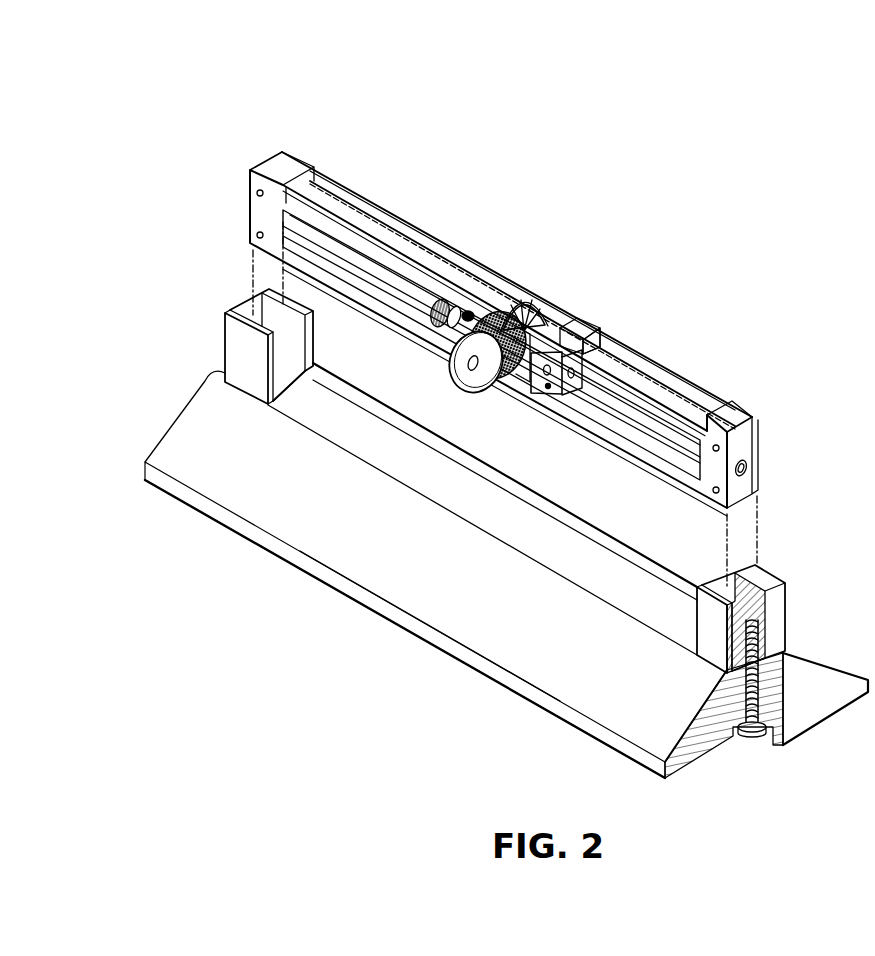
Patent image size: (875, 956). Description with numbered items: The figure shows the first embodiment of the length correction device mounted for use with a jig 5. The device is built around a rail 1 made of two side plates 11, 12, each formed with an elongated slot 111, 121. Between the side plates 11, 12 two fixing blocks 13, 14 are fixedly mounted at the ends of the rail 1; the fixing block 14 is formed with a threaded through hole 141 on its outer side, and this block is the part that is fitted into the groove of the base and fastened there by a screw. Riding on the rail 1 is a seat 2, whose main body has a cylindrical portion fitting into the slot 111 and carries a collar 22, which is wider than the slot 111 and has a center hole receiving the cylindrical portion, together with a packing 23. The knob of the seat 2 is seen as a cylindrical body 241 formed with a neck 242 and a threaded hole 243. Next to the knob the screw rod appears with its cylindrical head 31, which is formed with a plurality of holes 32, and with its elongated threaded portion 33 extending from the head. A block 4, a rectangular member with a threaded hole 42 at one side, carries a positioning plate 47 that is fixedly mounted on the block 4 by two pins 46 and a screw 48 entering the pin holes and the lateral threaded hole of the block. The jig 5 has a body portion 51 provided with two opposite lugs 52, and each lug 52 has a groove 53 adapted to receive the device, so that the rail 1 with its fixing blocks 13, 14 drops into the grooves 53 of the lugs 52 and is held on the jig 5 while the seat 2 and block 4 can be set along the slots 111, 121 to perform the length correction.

The rail 1 is at (506, 300).
The side plate 11 is at (506, 305).
The elongated slot 111 is at (400, 245).
The side plate 12 is at (383, 310).
The elongated slot 121 is at (313, 241).
The fixing block 13 is at (278, 168).
The fixing block 14 is at (775, 454).
The threaded through hole 141 is at (753, 453).
The seat 2 is at (513, 331).
The collar 22 is at (513, 327).
The packing 23 is at (540, 297).
The cylindrical head 31 is at (427, 310).
The holes 32 is at (443, 327).
The elongated threaded portion 33 is at (470, 310).
The block 4 is at (574, 373).
The threaded hole 42 is at (563, 400).
The pin 46 is at (547, 390).
The positioning plate 47 is at (543, 340).
The screw 48 is at (592, 347).
The cylindrical body 241 is at (483, 390).
The neck 242 is at (517, 380).
The threaded hole 243 is at (471, 366).
The jig 5 is at (380, 627).
The body portion 51 is at (515, 667).
The lug 52 is at (785, 578).
The groove 53 is at (747, 565).